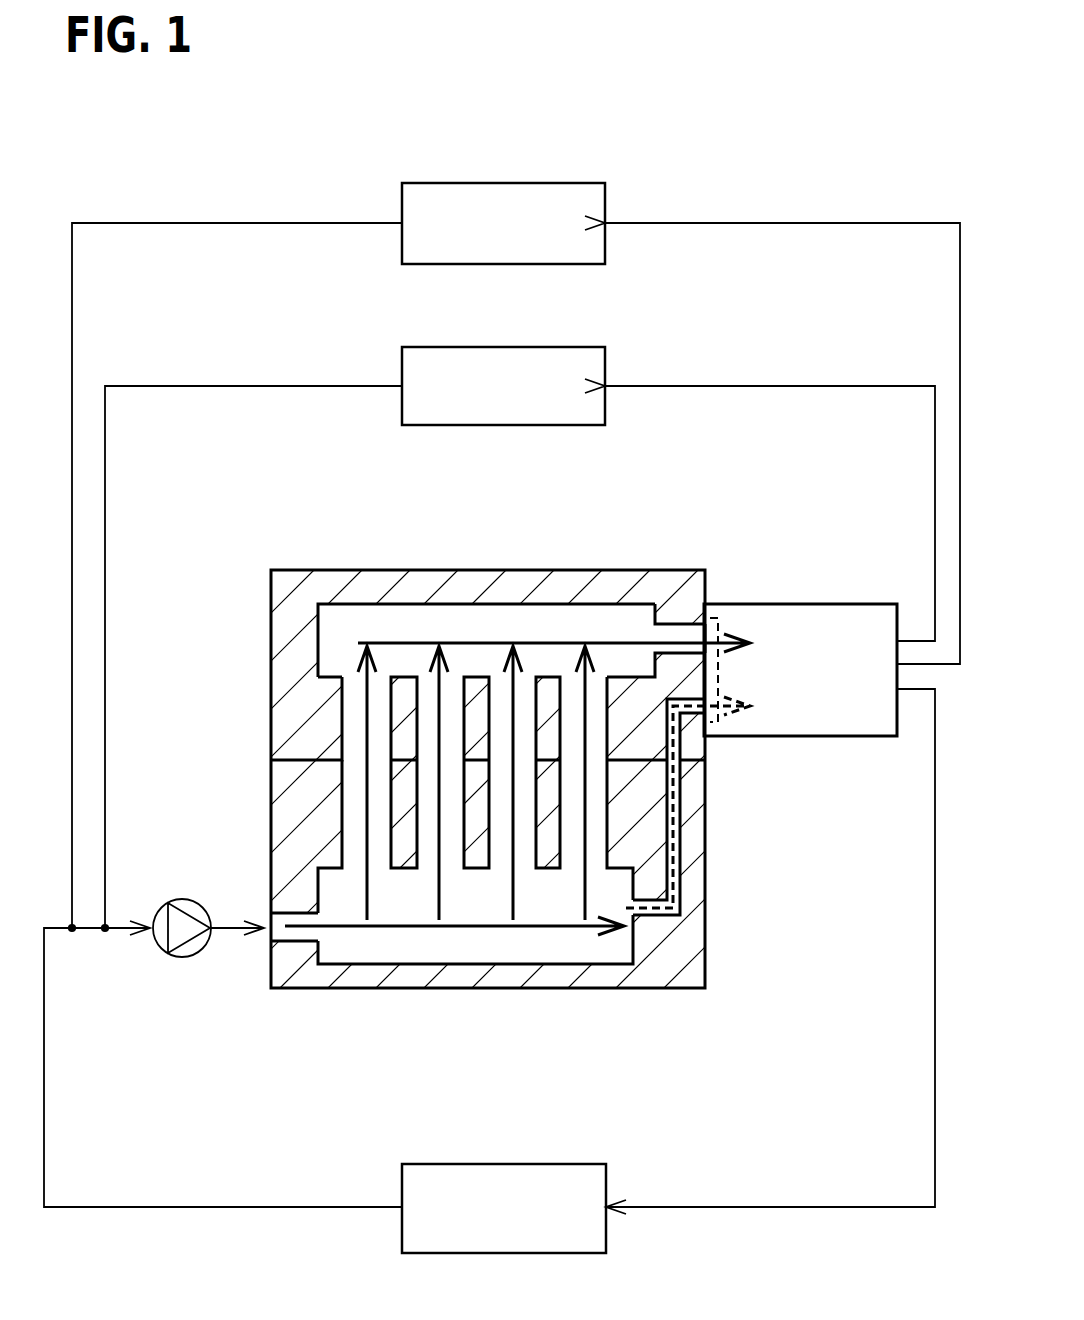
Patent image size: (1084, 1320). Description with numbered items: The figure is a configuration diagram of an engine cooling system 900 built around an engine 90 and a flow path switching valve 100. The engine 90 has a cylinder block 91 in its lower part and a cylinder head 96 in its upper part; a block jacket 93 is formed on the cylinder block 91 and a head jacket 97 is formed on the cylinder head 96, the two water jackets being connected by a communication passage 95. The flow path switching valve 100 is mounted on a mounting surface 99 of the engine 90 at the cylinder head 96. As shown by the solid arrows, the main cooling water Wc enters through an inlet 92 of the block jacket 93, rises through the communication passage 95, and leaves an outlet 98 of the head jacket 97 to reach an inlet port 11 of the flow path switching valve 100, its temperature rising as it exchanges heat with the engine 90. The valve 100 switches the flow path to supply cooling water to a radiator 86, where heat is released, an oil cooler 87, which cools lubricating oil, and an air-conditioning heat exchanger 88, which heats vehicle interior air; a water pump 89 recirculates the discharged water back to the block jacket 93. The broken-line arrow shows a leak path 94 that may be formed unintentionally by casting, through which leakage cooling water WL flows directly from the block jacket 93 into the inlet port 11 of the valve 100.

The engine cooling system 900 is at (745, 192).
The radiator 86 is at (447, 183).
The oil cooler 87 is at (447, 347).
The air-conditioning heat exchanger 88 is at (447, 1164).
The water pump 89 is at (185, 957).
The engine 90 is at (362, 548).
The cylinder block 91 is at (298, 815).
The inlet 92 is at (297, 936).
The block jacket 93 is at (477, 942).
The leak path 94 is at (690, 860).
The communication passage 95 is at (352, 722).
The cylinder head 96 is at (287, 612).
The head jacket 97 is at (477, 628).
The outlet 98 is at (673, 632).
The mounting surface 99 is at (707, 588).
The flow path switching valve 100 is at (818, 604).
The inlet port 11 is at (720, 626).
The cooling water Wc is at (555, 641).
The cooling water WL is at (676, 792).